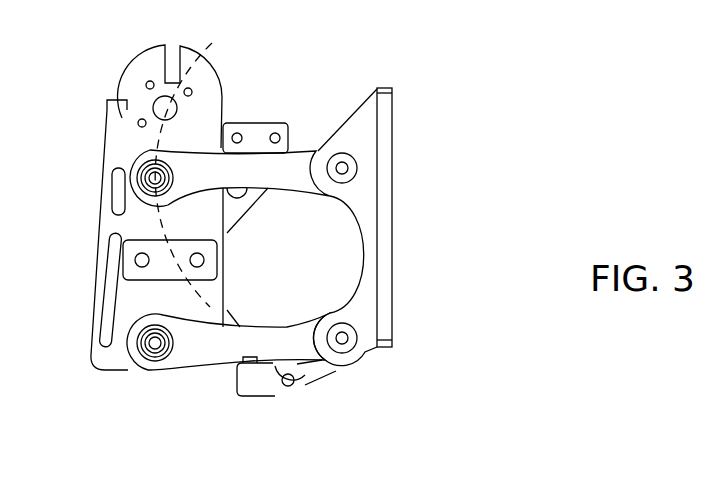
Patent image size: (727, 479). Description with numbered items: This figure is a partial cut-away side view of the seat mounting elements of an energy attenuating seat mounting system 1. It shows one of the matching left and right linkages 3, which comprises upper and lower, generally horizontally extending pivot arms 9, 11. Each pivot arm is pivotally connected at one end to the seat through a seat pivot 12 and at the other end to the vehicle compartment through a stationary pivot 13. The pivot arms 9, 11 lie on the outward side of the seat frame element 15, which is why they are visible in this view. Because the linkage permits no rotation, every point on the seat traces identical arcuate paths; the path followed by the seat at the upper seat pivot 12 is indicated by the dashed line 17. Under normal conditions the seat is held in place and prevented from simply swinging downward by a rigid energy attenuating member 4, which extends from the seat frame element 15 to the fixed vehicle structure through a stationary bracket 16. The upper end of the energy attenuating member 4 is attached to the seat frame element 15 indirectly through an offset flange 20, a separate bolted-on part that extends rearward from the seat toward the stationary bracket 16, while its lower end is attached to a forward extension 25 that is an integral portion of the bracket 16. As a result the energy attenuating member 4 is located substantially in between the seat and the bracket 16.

The energy attenuating seat mounting system 1 is at (463, 216).
The linkage 3 is at (175, 413).
The energy attenuating member 4 is at (253, 393).
The upper pivot arm 9 is at (308, 142).
The lower pivot arm 11 is at (260, 338).
The seat pivot 12 is at (150, 183).
The stationary pivot 13 is at (350, 166).
The seat frame element 15 is at (112, 360).
The stationary bracket 16 is at (393, 257).
The dashed line 17 is at (160, 131).
The offset flange 20 is at (253, 205).
The forward extension 25 is at (307, 377).